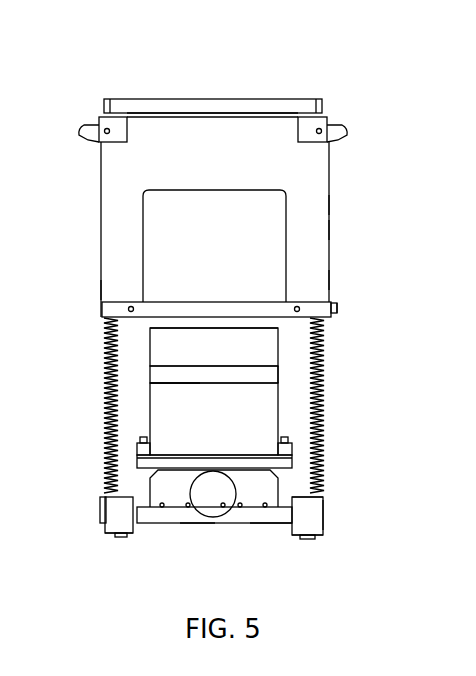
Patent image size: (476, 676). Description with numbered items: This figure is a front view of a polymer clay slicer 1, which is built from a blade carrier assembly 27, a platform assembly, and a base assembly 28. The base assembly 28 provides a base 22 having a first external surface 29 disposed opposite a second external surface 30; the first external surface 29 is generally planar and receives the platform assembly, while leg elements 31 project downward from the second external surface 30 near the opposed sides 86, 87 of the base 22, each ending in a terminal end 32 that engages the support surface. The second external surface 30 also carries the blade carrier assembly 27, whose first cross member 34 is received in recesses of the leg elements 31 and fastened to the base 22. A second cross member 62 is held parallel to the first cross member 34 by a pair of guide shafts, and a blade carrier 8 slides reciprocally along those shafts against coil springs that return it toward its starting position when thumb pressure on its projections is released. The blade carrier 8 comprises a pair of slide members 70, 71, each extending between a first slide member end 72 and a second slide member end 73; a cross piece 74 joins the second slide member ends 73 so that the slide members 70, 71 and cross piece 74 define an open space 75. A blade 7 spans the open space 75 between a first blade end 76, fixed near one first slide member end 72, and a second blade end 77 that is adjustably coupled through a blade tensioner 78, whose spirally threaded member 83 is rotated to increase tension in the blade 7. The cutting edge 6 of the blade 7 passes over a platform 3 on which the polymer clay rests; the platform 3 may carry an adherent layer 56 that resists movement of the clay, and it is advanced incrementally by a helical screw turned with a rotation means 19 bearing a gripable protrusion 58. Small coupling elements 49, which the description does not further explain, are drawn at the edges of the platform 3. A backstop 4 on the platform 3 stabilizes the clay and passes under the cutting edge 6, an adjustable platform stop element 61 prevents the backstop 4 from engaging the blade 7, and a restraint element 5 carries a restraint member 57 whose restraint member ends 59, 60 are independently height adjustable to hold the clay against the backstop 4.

The polymer clay slicer 1 is at (358, 68).
The blade carrier assembly 27 is at (98, 94).
The second cross member 62 is at (216, 105).
The cross piece 74 is at (248, 125).
The second slide member end 73 is at (307, 153).
The slide member 70 is at (101, 275).
The blade carrier 8 is at (329, 205).
The slide member 71 is at (330, 230).
The first slide member end 72 is at (320, 278).
The blade end 76 is at (118, 300).
The open space 75 is at (228, 228).
The blade 7 is at (150, 300).
The blade end 77 is at (283, 302).
The blade tensioner 78 is at (340, 307).
The spirally threaded member 83 is at (336, 305).
The cutting edge 6 is at (152, 322).
The backstop 4 is at (308, 338).
The restraint member end 59 is at (150, 368).
The restraint member 57 is at (150, 383).
The restraint member end 60 is at (278, 374).
The restraint element 5 is at (276, 372).
The adherent layer 56 is at (226, 461).
The platform 3 is at (318, 470).
The adjustable platform stop element 61 is at (243, 480).
The gripable protrusion 58 is at (215, 507).
The rotation means 19 is at (160, 523).
The second external surface 30 is at (270, 523).
The first cross member 34 is at (195, 527).
The mounting bolts 49 is at (138, 515).
The base 22 is at (100, 525).
The opposed side 86 is at (105, 500).
The leg element 31 is at (107, 537).
The terminal end 32 is at (126, 540).
The base assembly 28 is at (327, 528).
The first external surface 29 is at (330, 503).
The opposed side 87 is at (335, 512).